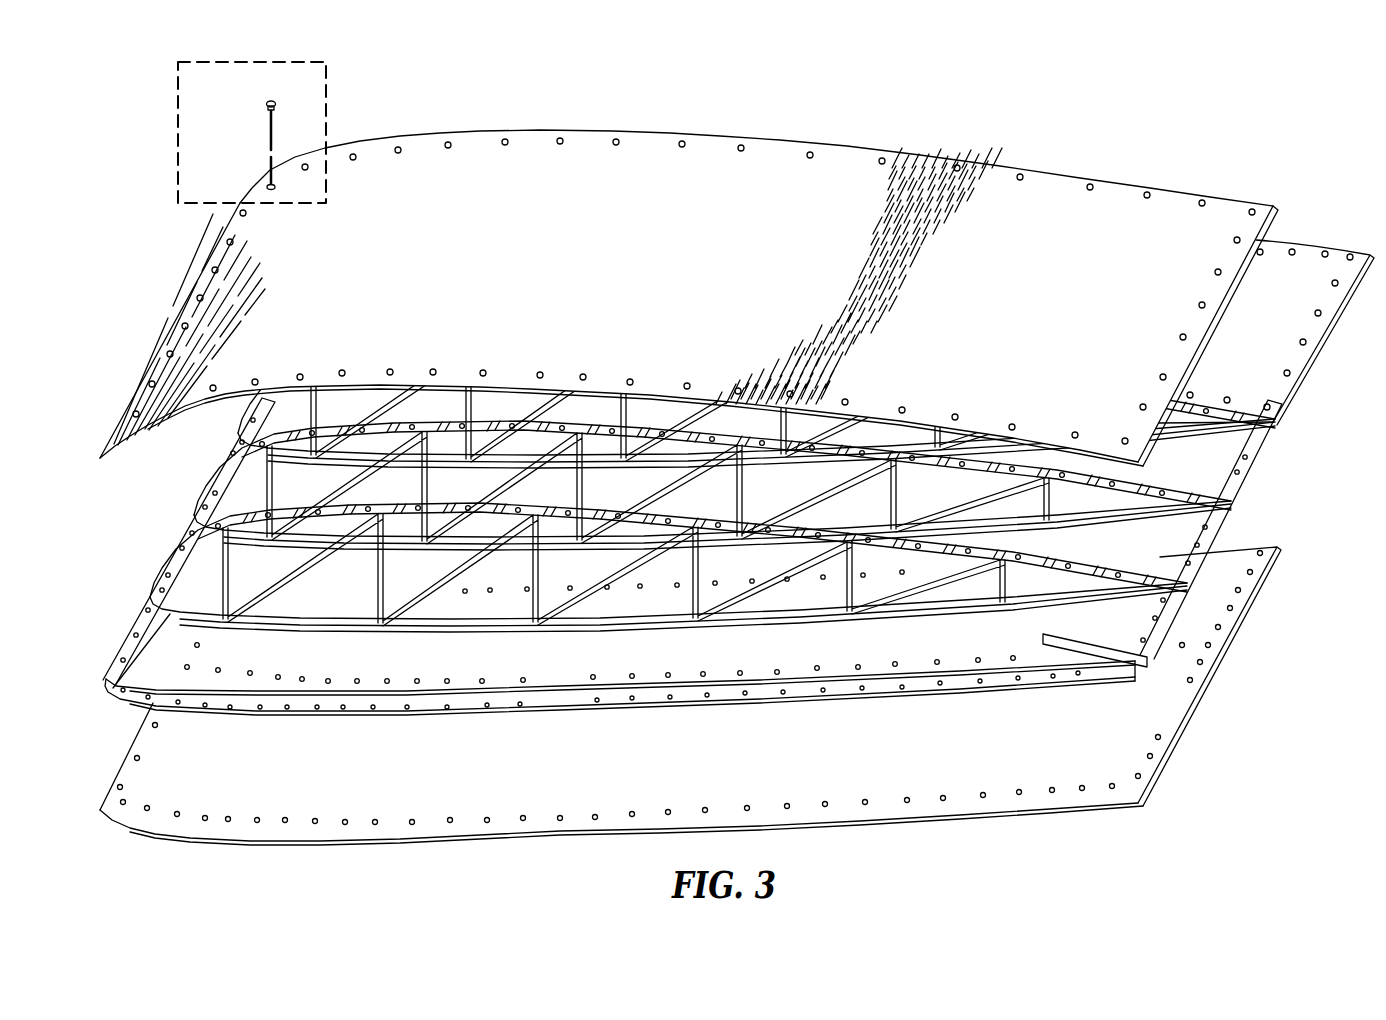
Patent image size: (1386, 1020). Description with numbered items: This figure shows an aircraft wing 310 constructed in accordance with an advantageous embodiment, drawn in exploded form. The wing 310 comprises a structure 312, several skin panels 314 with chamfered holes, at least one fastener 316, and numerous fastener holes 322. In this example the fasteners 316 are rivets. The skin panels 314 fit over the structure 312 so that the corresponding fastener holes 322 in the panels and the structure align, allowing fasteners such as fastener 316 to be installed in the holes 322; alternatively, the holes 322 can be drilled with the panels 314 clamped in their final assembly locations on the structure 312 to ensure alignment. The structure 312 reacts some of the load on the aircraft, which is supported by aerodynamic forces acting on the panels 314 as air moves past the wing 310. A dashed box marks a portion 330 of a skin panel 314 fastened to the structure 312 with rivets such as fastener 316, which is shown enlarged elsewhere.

The wing 310 is at (1015, 107).
The structure 312 is at (1247, 478).
The skin panels 314 is at (857, 144).
The fastener 316 is at (266, 102).
The fastener holes 322 is at (138, 416).
The portion 330 is at (327, 84).